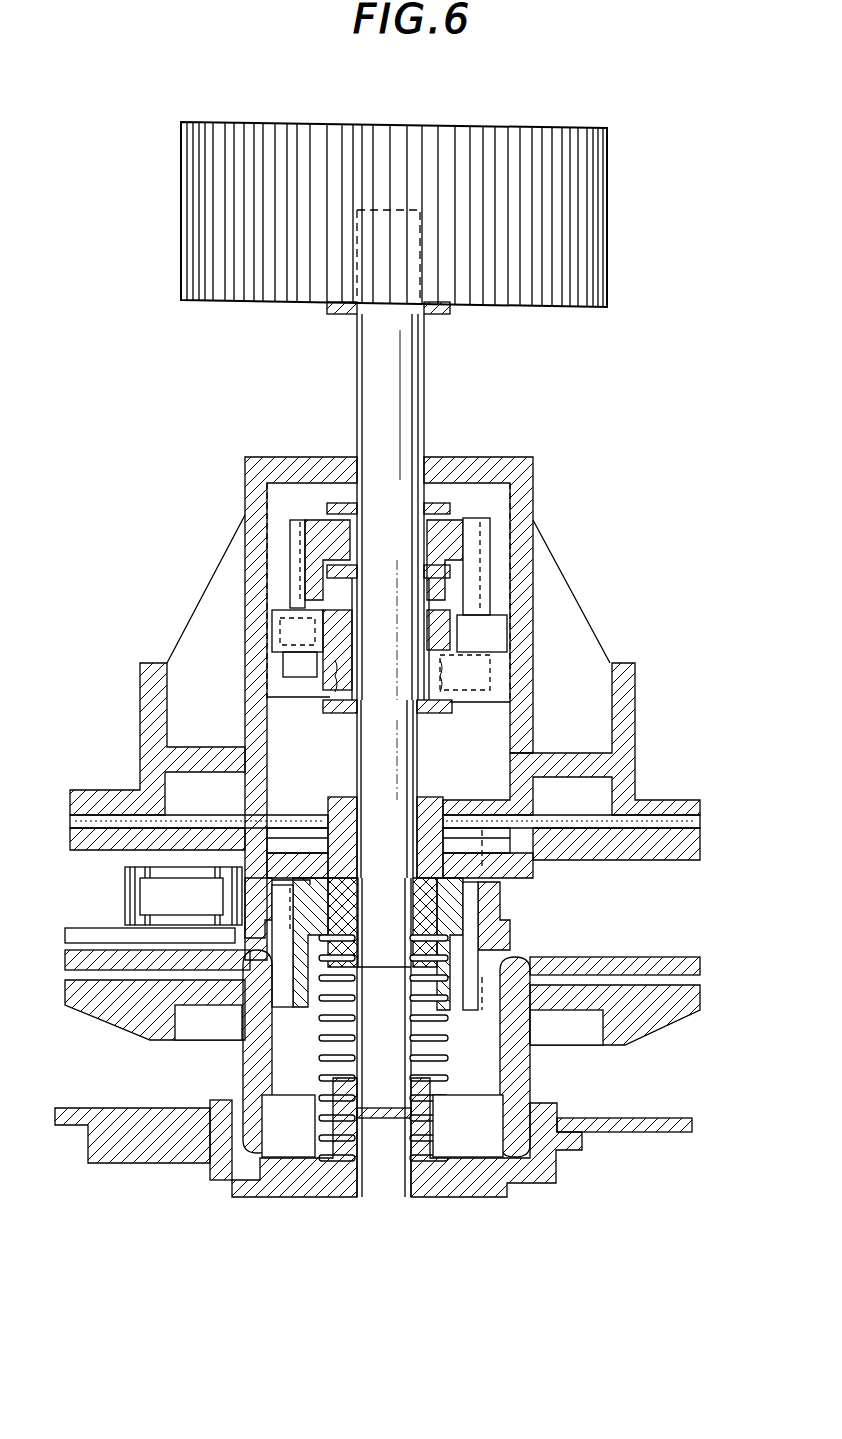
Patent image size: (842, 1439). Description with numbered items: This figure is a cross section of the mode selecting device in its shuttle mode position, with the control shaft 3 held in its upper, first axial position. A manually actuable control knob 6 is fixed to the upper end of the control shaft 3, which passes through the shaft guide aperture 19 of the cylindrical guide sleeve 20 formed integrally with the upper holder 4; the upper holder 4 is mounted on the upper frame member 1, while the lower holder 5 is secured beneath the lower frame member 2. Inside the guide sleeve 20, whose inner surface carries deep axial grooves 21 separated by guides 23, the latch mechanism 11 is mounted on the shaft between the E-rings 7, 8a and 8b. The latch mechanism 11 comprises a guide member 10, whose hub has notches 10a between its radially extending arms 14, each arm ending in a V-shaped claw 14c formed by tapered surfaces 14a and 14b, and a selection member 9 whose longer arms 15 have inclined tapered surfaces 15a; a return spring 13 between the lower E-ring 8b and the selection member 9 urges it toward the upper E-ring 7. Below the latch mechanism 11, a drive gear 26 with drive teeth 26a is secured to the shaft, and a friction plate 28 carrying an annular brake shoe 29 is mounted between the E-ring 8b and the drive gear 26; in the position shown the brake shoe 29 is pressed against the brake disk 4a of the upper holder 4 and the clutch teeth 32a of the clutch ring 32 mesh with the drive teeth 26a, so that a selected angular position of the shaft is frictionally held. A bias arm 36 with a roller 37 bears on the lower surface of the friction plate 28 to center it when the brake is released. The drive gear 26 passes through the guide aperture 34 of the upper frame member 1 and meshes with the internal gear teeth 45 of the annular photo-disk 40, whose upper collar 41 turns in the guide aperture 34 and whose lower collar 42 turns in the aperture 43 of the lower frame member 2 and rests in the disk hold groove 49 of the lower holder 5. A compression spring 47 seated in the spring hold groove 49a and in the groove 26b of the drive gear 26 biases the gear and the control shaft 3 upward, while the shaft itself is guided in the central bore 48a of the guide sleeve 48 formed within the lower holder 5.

The upper frame member 1 is at (695, 972).
The lower frame member 2 is at (643, 1122).
The control shaft 3 is at (426, 403).
The upper holder 4 is at (625, 498).
The brake disk 4a is at (650, 820).
The lower holder 5 is at (175, 1150).
The control knob 6 is at (600, 262).
The E-ring 7 is at (447, 478).
The E-ring 8a is at (388, 601).
The E-ring 8b is at (348, 712).
The selection member 9 is at (322, 690).
The guide member 10 is at (312, 600).
The notches 10a is at (490, 593).
The latch mechanism 11 is at (206, 536).
The return spring 13 is at (332, 702).
The arms 14 is at (300, 565).
The tapered surface 14a is at (300, 605).
The tapered surface 14b is at (475, 610).
The V-shaped claw 14c is at (465, 640).
The arms 15 is at (290, 667).
The tapered surface 15a is at (290, 638).
The shaft guide aperture 19 is at (362, 470).
The guide sleeve 20 is at (535, 727).
The deep axial grooves 21 is at (485, 495).
The guides 23 is at (470, 482).
The drive gear 26 is at (465, 902).
The drive teeth 26a is at (485, 937).
The groove 26b is at (566, 1027).
The friction plate 28 is at (702, 882).
The brake shoe 29 is at (688, 822).
The clutch ring 32 is at (520, 913).
The clutch teeth 32a is at (478, 815).
The guide aperture 34 is at (208, 1022).
The bias arm 36 is at (80, 930).
The roller 37 is at (125, 896).
The photo-disk 40 is at (85, 1000).
The upper collar 41 is at (232, 1040).
The lower collar 42 is at (245, 1082).
The aperture 43 is at (565, 1115).
The internal gear teeth 45 is at (490, 1067).
The compression spring 47 is at (447, 1140).
The guide sleeve 48 is at (342, 1163).
The central bore 48a is at (393, 1198).
The disk hold groove 49 is at (250, 1152).
The spring hold groove 49a is at (298, 1160).